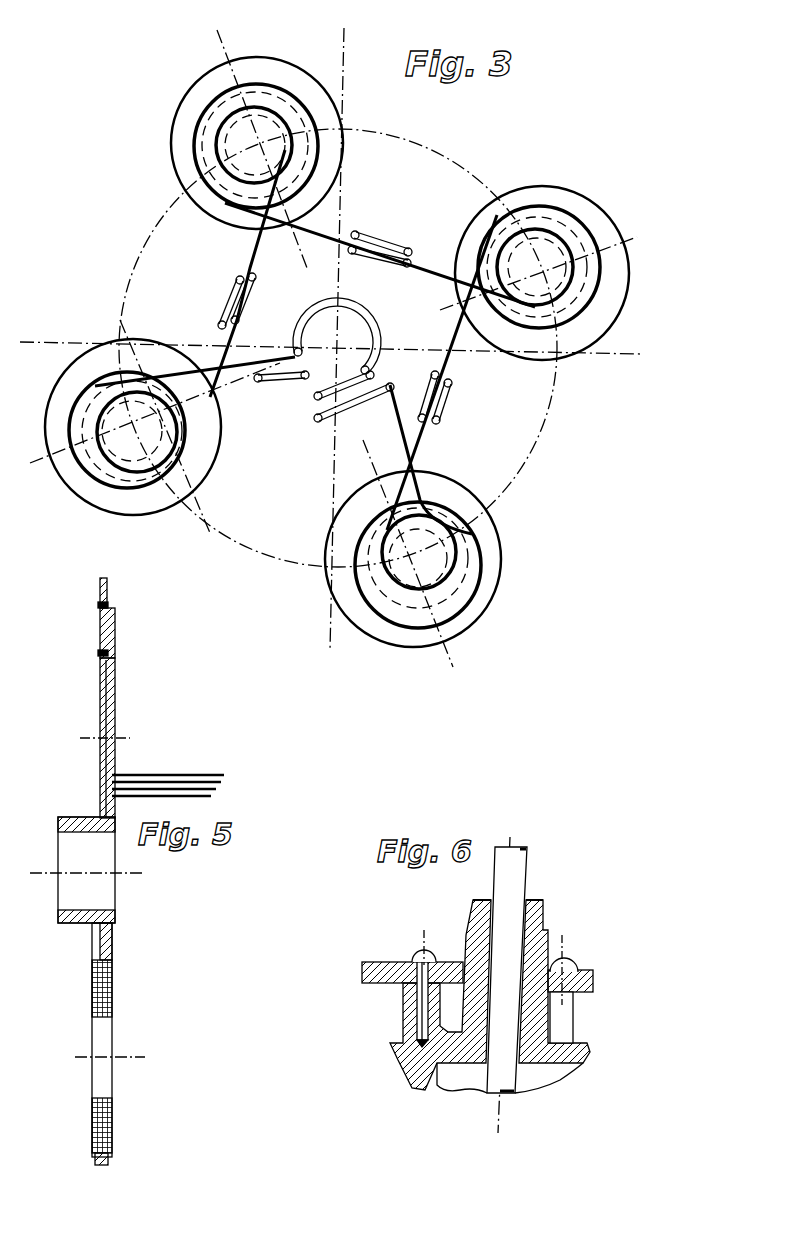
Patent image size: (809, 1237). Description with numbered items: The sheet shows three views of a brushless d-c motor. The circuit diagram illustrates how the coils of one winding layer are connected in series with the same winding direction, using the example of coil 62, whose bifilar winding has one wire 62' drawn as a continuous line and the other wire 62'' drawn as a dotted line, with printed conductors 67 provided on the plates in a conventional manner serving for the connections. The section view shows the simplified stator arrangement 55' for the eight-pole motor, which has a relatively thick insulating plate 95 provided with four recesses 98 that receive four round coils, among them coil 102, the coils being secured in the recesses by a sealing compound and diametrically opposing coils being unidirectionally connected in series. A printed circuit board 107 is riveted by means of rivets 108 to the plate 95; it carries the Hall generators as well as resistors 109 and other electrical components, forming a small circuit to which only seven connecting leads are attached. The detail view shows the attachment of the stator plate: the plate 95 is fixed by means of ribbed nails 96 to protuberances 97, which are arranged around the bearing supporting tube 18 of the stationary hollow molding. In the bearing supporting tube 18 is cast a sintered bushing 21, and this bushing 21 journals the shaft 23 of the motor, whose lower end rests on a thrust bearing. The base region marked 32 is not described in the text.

In FIG. 3, the coil 62 is at (351, 332).
In FIG. 3, the wire of the bifilar winding 62' is at (272, 273).
In FIG. 3, the wire of the bifilar winding 62'' is at (380, 243).
In FIG. 3, the printed conductors 67 is at (380, 240).
In FIG. 5, the stator arrangement 55' is at (59, 613).
In FIG. 5, the printed circuit board 107 is at (108, 585).
In FIG. 5, the resistors 109 is at (116, 622).
In FIG. 5, the rivets 108 is at (116, 728).
In FIG. 5, the insulating plate 95 is at (114, 922).
In FIG. 6, the insulating plate 95 is at (375, 962).
In FIG. 5, the round coil 102 is at (112, 985).
In FIG. 5, the recesses 98 is at (112, 1150).
In FIG. 6, the shaft 23 is at (520, 872).
In FIG. 6, the sintered bushing 21 is at (543, 905).
In FIG. 6, the bearing supporting tube 18 is at (540, 930).
In FIG. 6, the ribbed nails 96 is at (420, 950).
In FIG. 6, the protuberances 97 is at (566, 1020).
In FIG. 6, the base 32 is at (450, 1093).